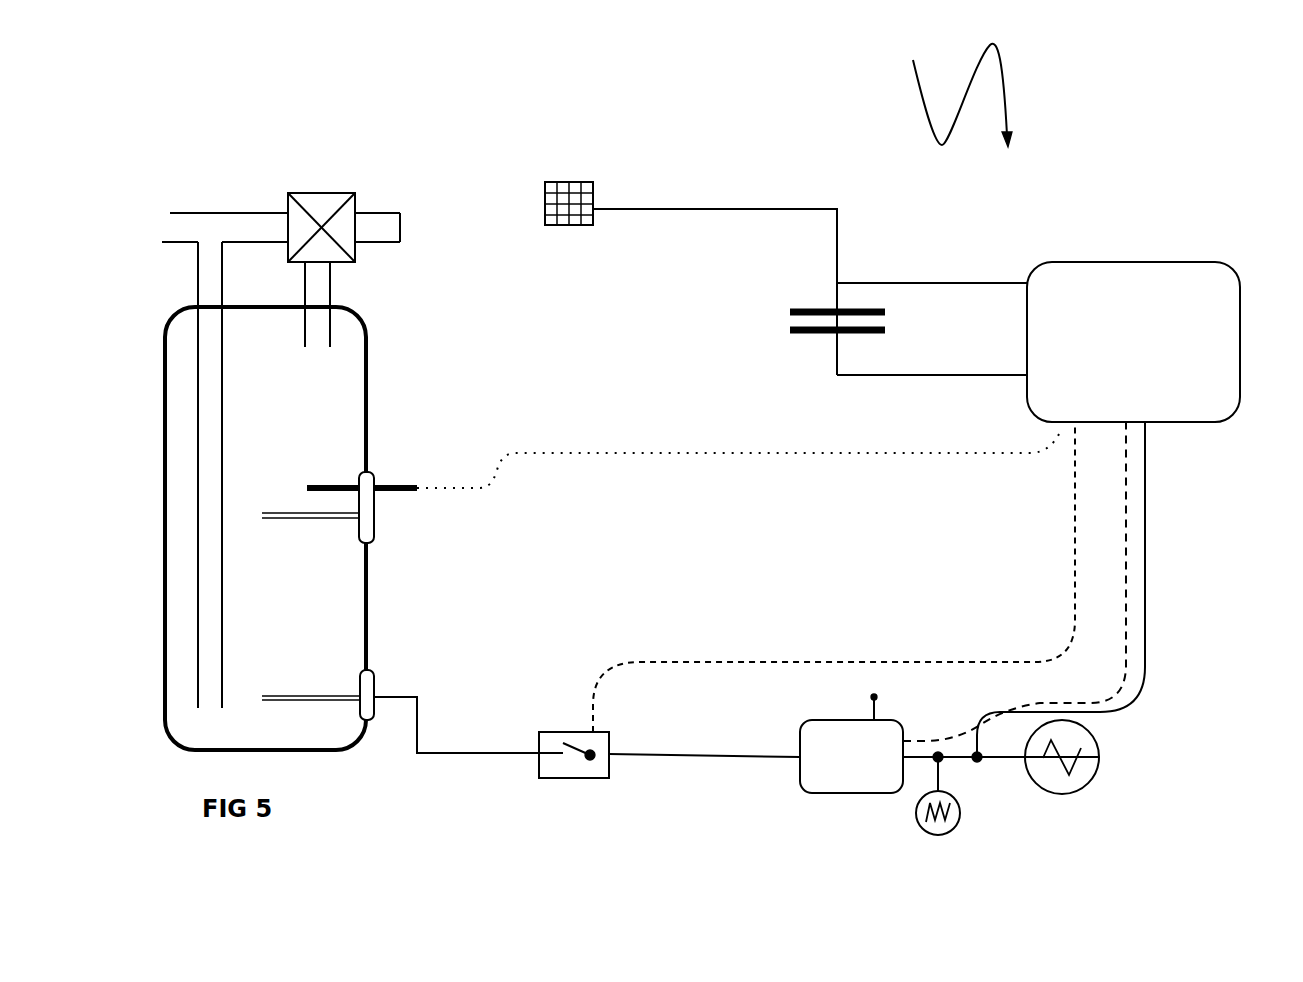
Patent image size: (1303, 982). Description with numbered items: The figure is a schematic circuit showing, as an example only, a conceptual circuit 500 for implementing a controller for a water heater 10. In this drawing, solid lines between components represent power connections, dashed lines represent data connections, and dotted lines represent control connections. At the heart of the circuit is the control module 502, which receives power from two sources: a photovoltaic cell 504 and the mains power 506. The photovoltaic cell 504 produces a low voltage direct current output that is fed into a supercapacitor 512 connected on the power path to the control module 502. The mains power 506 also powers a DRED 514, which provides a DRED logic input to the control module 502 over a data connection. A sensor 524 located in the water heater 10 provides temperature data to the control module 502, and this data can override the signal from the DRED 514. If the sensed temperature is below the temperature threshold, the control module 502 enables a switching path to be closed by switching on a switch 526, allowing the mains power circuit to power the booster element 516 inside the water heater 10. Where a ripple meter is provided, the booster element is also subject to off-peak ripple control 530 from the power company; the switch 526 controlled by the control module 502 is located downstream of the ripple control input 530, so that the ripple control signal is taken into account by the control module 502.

The water heater 10 is at (367, 400).
The conceptual circuit 500 is at (939, 89).
The control module 502 is at (1038, 315).
The photovoltaic cell(s) 504 is at (567, 180).
The mains power 506 is at (1070, 790).
The supercapacitor 512 is at (884, 335).
The DRED 514 is at (972, 607).
The booster element 516 is at (302, 698).
The sensor 524 is at (317, 482).
The switch 526 is at (556, 728).
The off-peak ripple control 530 is at (952, 828).